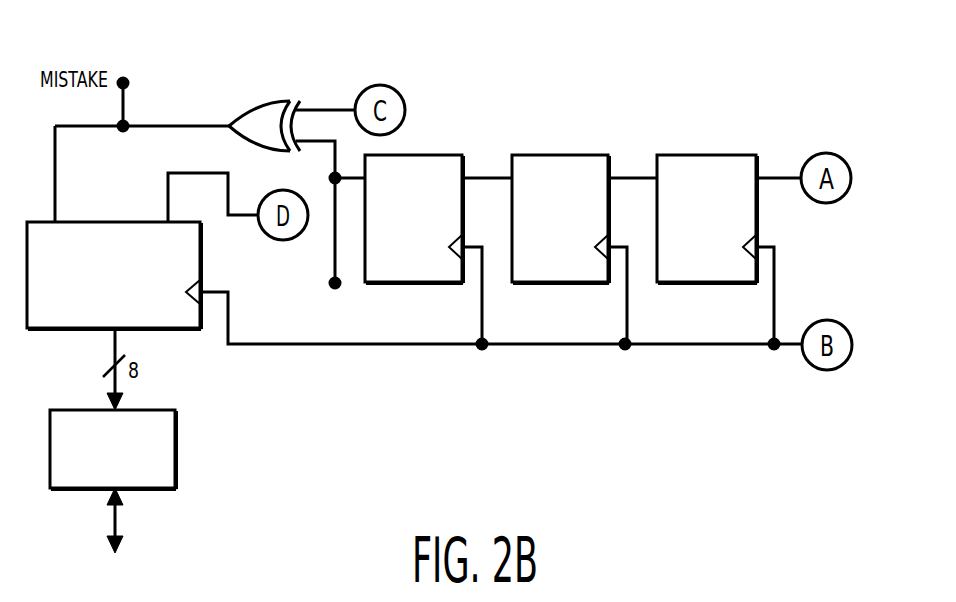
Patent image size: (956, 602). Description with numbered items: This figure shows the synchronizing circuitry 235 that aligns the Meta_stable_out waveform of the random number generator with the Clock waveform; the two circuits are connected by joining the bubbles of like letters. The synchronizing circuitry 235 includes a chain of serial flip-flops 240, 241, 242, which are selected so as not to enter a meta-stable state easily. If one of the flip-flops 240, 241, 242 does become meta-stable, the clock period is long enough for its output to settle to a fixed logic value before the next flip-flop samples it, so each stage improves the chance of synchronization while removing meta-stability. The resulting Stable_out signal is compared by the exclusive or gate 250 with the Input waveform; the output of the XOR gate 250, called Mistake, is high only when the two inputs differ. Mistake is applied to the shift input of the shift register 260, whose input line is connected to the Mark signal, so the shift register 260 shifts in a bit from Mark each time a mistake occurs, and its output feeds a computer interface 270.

The synchronizing circuitry 235 is at (652, 63).
The flip-flop 240 is at (718, 153).
The flip-flop 241 is at (563, 153).
The flip-flop 242 is at (437, 153).
The exclusive or gate 250 is at (251, 105).
The shift register 260 is at (118, 222).
The computer interface 270 is at (178, 440).